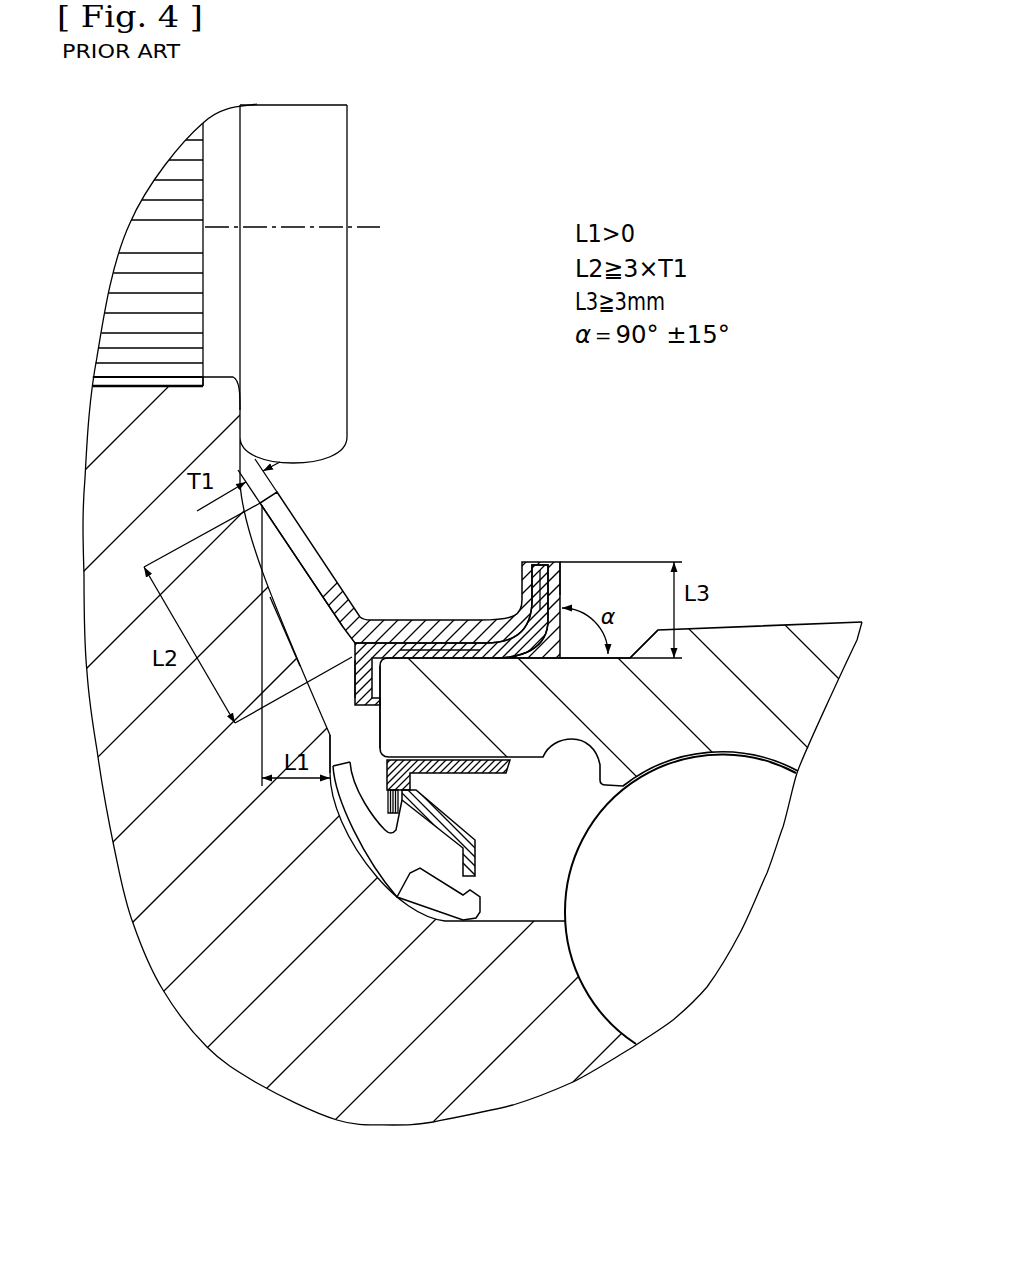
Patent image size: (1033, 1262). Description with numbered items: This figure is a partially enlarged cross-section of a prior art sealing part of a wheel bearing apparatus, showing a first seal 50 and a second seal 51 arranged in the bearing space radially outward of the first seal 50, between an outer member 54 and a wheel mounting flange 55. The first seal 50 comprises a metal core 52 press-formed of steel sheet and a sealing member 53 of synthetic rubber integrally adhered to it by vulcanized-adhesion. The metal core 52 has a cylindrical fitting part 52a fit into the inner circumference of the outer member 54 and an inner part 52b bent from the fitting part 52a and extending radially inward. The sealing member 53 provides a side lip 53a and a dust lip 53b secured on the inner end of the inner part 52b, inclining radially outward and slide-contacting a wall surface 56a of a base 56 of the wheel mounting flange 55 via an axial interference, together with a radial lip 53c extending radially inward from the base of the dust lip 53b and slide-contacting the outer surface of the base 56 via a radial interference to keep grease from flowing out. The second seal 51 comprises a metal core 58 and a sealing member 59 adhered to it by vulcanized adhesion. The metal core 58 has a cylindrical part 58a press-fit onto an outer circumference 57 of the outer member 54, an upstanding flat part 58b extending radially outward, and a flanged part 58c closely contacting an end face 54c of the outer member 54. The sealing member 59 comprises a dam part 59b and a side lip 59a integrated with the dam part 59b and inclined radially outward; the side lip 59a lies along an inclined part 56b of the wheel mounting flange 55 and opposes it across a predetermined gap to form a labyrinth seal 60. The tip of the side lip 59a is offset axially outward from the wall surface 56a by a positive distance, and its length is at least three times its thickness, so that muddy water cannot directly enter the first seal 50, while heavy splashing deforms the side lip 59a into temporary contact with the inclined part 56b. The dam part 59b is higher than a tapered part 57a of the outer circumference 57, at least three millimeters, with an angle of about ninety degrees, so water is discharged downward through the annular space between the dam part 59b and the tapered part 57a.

The first seal 50 is at (540, 825).
The second seal 51 is at (491, 623).
The metal core 52 is at (463, 750).
The cylindrical fitting part 52a is at (470, 767).
The inner part 52b is at (417, 797).
The sealing member 53 is at (540, 850).
The side lip 53a is at (452, 832).
The dust lip 53b is at (468, 858).
The radial lip 53c is at (475, 894).
The outer member 54 is at (775, 660).
The end face 54c is at (372, 722).
The wheel mounting flange 55 is at (126, 437).
The base 56 is at (387, 862).
The wall surface 56a is at (348, 742).
The inclined part 56b is at (300, 608).
The outer circumference 57 is at (575, 642).
The tapered part 57a is at (633, 640).
The metal core 58 is at (525, 545).
The cylindrical part 58a is at (443, 647).
The upstanding flat part 58b is at (528, 605).
The flanged part 58c is at (368, 672).
The sealing member 59 is at (362, 612).
The side lip 59a is at (283, 497).
The dam part 59b is at (553, 562).
The labyrinth seal 60 is at (327, 650).